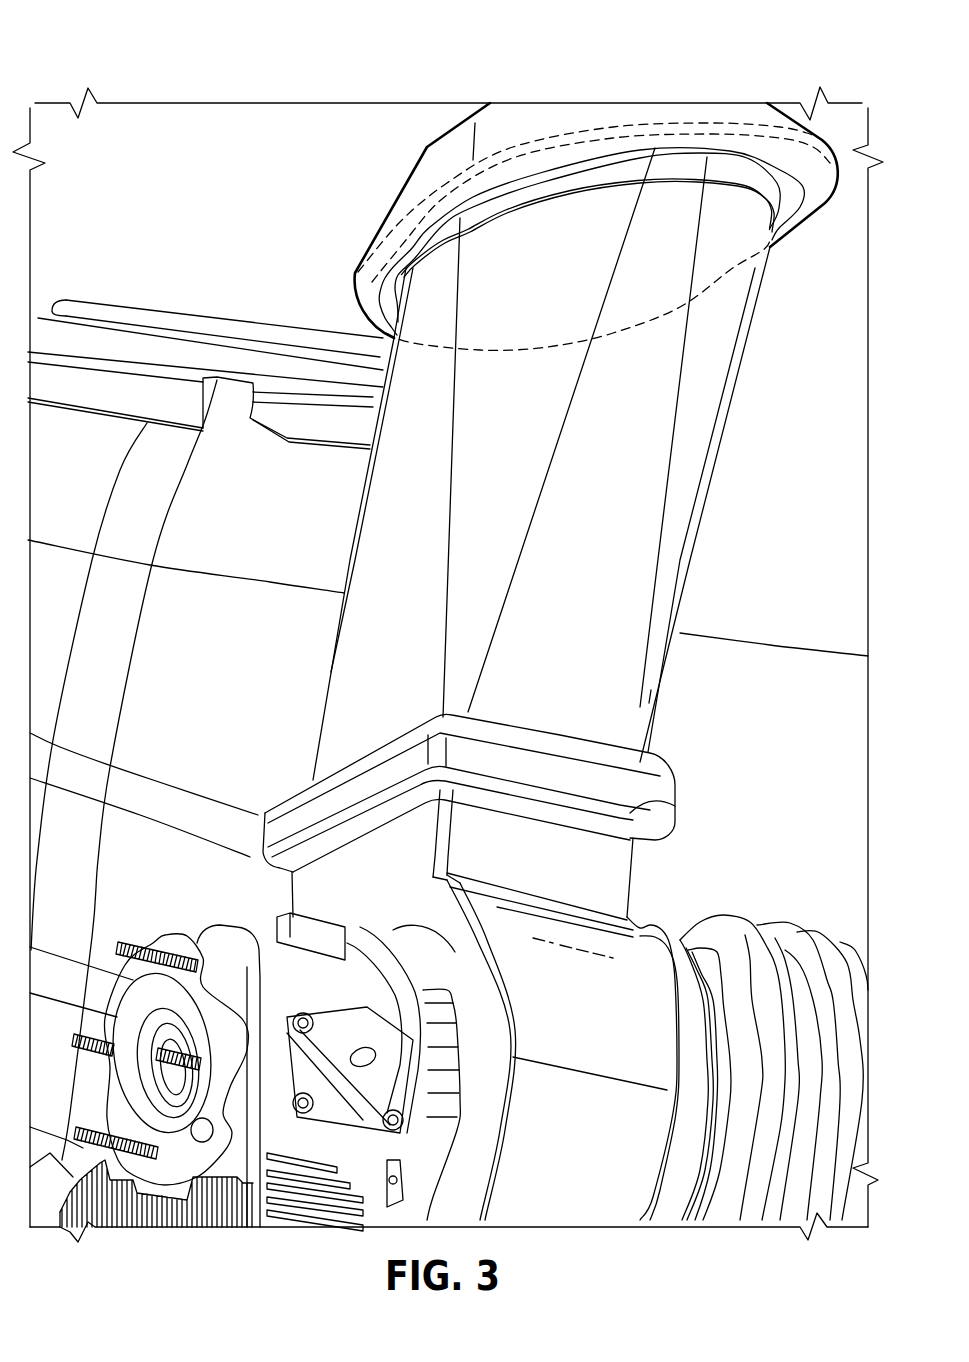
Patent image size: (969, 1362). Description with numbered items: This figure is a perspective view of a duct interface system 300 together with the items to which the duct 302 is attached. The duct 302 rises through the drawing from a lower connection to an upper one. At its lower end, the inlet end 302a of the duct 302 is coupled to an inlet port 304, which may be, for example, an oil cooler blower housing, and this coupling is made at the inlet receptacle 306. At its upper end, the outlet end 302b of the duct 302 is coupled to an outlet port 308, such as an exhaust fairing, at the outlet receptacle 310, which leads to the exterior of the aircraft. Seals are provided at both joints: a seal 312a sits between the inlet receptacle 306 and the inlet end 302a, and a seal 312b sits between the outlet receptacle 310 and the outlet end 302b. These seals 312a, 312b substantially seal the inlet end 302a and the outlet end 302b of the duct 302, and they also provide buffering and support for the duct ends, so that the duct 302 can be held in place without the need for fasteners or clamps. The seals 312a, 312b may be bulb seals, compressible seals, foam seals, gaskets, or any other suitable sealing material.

The duct interface system 300 is at (166, 64).
The duct 302 is at (612, 589).
The inlet end 302a is at (603, 734).
The outlet end 302b is at (713, 340).
The inlet port 304 is at (602, 1020).
The inlet receptacle 306 is at (677, 803).
The outlet port 308 is at (537, 352).
The outlet receptacle 310 is at (352, 287).
The seal 312a is at (347, 813).
The seal 312b is at (395, 212).